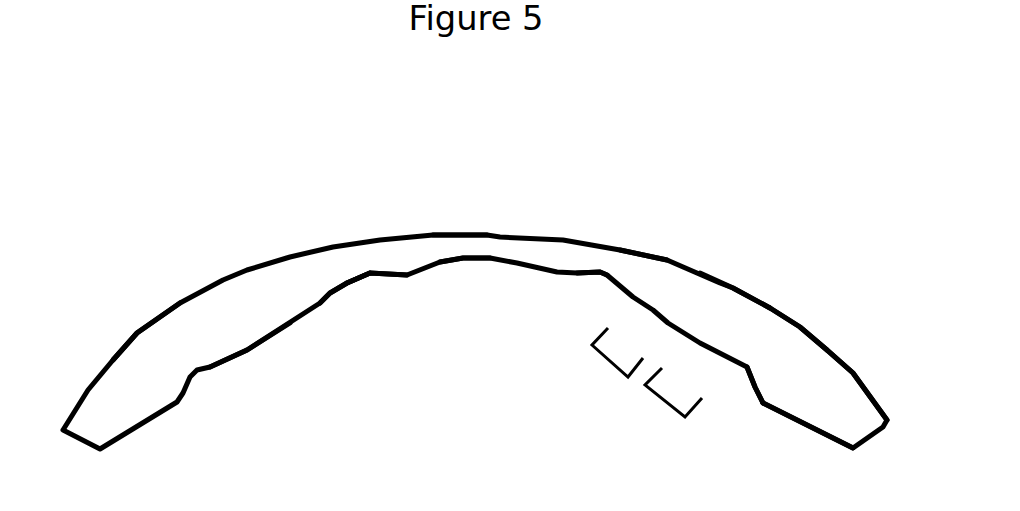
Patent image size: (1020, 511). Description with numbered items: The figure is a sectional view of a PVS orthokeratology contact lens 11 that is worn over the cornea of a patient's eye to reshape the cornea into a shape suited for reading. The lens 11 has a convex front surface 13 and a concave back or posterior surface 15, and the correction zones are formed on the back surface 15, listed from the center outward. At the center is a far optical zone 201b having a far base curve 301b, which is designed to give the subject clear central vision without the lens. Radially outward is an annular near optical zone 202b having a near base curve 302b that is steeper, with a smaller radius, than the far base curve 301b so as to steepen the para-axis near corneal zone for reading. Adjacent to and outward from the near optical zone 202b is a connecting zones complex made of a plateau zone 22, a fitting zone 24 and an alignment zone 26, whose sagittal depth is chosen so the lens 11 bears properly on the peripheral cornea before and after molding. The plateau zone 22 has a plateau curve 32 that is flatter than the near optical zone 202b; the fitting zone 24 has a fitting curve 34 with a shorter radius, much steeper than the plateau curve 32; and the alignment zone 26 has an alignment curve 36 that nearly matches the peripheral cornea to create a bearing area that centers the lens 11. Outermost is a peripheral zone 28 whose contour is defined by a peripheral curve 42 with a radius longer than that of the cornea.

The PVS ortho-k contact lens 11 is at (180, 238).
The convex front surface 13 is at (138, 333).
The back or posterior surface 15 is at (240, 353).
The plateau zone 22 is at (645, 277).
The fitting zone 24 is at (720, 310).
The alignment zone 26 is at (778, 358).
The peripheral zone 28 is at (840, 397).
The plateau curve 32 is at (608, 357).
The fitting curve 34 is at (665, 399).
The alignment curve 36 is at (752, 387).
The peripheral curve 42 is at (808, 433).
The far optical zone 201b is at (465, 248).
The near optical zone 202b is at (345, 267).
The far base curve 301b is at (473, 263).
The near base curve 302b is at (365, 282).